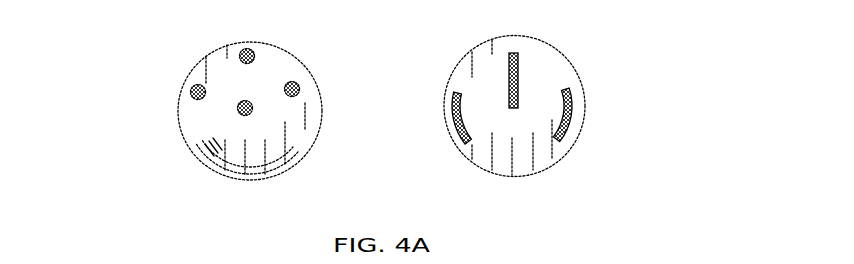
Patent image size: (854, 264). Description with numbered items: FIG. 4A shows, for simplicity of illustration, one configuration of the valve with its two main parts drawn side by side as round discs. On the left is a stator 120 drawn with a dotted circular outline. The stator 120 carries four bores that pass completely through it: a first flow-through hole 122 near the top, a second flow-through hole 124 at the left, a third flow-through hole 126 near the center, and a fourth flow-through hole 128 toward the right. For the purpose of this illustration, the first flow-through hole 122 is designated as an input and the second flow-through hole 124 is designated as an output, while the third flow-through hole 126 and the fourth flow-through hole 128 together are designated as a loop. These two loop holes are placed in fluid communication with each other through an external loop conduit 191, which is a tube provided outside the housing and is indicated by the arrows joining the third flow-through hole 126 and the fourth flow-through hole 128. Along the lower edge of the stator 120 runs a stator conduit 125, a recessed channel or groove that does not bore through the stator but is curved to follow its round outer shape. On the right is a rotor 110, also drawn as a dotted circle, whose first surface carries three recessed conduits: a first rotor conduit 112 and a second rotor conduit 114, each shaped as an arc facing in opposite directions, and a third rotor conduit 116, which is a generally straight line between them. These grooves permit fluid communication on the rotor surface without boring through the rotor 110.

The rotor 110 is at (545, 52).
The first rotor conduit 112 is at (563, 127).
The second rotor conduit 114 is at (467, 130).
The third rotor conduit 116 is at (518, 67).
The stator 120 is at (198, 123).
The first flow-through hole 122 is at (240, 53).
The second flow-through hole 124 is at (190, 92).
The stator conduit 125 is at (219, 152).
The third flow-through hole 126 is at (250, 106).
The fourth flow-through hole 128 is at (298, 89).
The external loop conduit 191 is at (250, 112).